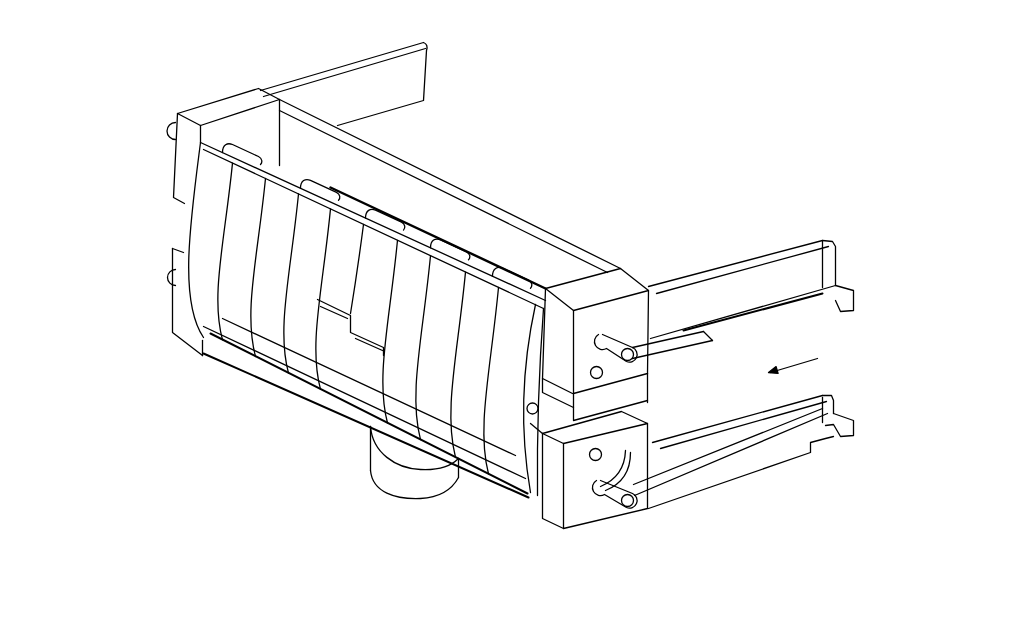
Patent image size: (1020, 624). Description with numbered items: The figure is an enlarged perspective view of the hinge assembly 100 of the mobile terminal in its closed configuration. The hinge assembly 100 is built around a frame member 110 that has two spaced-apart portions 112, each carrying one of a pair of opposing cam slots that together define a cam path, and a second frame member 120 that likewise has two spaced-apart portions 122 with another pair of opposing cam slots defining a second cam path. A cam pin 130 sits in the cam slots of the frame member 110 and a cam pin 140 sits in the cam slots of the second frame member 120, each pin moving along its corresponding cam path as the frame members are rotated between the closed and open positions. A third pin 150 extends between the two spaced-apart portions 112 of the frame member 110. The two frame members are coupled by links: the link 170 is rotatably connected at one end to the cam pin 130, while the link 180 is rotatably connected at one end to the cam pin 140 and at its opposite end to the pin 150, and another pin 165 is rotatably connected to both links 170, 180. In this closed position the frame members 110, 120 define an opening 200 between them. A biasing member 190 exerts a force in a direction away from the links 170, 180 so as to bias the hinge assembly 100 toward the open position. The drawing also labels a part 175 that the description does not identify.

The hinge assembly 100 is at (115, 176).
The frame member 110 is at (456, 146).
The spaced-apart portions 112 is at (231, 104).
The second frame member 120 is at (187, 383).
The spaced-apart portions 122 is at (553, 527).
The cam pin 130 is at (628, 360).
The cam pin 140 is at (624, 503).
The third pin 150 is at (594, 368).
The pin 165 is at (528, 413).
The link 170 is at (517, 313).
The lower rail 175 is at (340, 394).
The link 180 is at (450, 285).
The biasing member 190 is at (760, 305).
The opening 200 is at (811, 358).